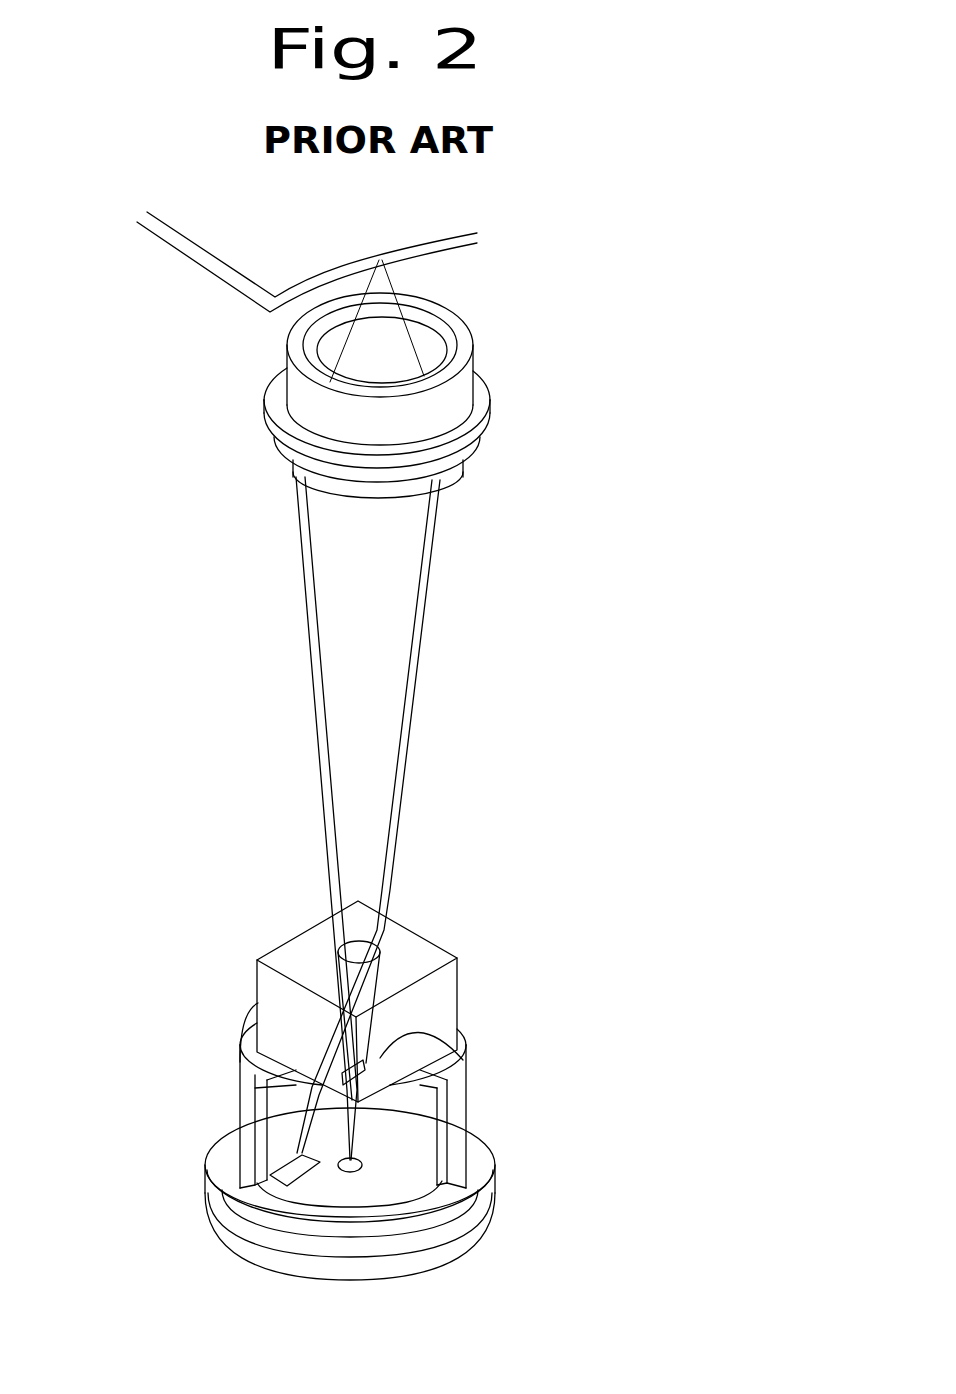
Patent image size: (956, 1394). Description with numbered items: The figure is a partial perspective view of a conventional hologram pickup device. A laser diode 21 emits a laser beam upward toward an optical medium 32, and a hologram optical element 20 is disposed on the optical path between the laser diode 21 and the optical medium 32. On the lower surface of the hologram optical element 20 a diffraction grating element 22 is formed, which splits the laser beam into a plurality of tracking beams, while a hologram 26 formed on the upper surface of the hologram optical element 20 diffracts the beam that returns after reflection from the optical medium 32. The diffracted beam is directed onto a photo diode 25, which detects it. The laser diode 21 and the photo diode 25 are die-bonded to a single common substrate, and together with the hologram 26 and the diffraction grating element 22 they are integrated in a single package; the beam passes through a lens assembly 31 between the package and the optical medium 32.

The hologram optical element 20 is at (410, 958).
The laser diode 21 is at (362, 1140).
The diffraction grating element 22 is at (450, 1045).
The photo diode 25 is at (287, 1188).
The hologram 26 is at (360, 950).
The objective lens 31 is at (457, 400).
The optical medium 32 is at (433, 228).